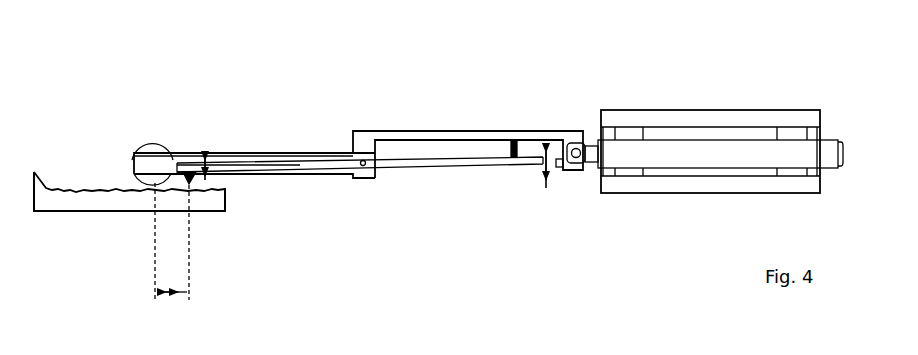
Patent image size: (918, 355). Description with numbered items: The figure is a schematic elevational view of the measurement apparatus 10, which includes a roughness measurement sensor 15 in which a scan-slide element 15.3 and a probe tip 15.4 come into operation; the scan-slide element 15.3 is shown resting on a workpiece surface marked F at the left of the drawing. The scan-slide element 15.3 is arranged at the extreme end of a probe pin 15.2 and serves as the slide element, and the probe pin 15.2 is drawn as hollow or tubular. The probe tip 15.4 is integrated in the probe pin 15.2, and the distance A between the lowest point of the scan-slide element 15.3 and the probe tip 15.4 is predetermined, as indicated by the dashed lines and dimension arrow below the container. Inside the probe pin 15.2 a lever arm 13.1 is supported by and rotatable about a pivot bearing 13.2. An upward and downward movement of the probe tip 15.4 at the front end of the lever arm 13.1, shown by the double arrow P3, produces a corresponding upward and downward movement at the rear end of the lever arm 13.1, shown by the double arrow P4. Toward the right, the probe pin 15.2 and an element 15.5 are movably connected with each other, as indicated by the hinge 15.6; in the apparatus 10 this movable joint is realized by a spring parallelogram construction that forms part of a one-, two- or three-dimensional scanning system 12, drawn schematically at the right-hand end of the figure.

The apparatus 10 is at (830, 80).
The scanning system 12 is at (674, 88).
The lever arm 13.1 is at (430, 163).
The pivot bearing 13.2 is at (362, 179).
The roughness measurement sensor 15 is at (482, 86).
The probe pin 15.2 is at (290, 152).
The scan-slide element 15.3 is at (145, 182).
The probe tip 15.4 is at (195, 185).
The element 15.5 is at (658, 158).
The hinge 15.6 is at (570, 172).
The fluid F is at (100, 190).
The double arrow P3 is at (205, 156).
The double arrow P4 is at (545, 158).
The distance A is at (172, 251).